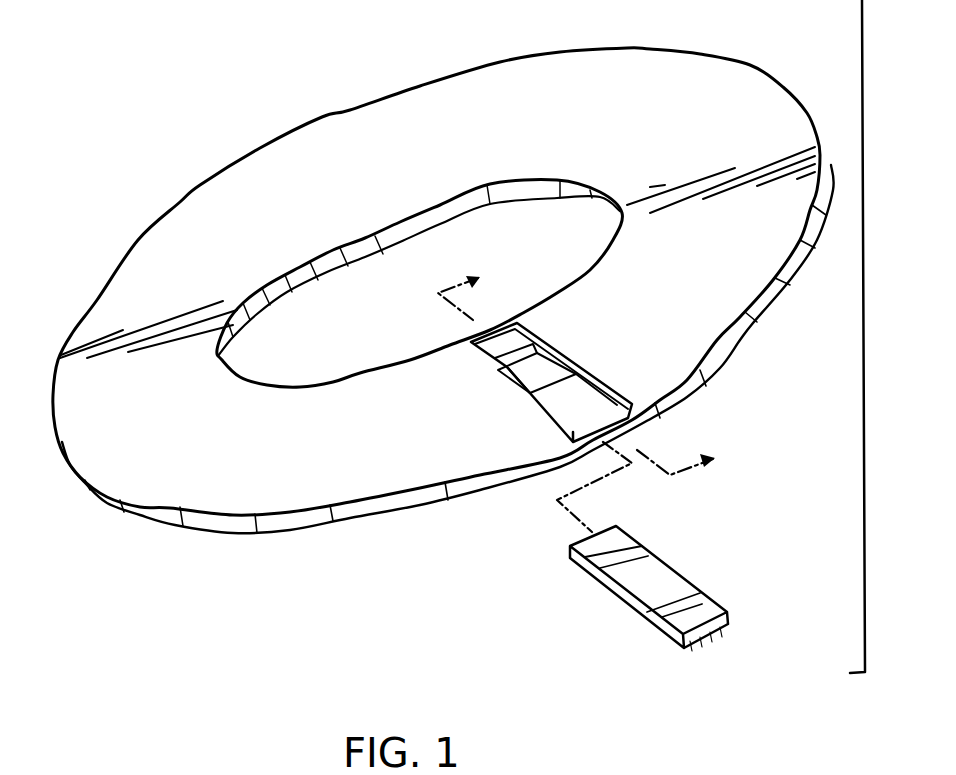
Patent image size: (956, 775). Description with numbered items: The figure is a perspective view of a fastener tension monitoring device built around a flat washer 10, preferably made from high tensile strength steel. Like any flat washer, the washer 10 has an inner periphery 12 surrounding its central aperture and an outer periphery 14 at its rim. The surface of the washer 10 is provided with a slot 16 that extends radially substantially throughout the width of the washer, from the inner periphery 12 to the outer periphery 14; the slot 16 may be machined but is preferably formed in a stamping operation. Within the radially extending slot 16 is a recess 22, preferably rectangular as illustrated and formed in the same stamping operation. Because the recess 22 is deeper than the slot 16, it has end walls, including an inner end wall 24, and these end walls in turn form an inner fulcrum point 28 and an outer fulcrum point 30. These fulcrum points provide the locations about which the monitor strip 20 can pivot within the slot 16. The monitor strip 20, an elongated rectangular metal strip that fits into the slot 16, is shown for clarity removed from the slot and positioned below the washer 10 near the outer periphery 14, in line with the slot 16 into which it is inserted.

The flat washer 10 is at (443, 328).
The inner periphery 12 is at (293, 278).
The outer periphery 14 is at (322, 117).
The slot 16 is at (600, 413).
The monitor strip 20 is at (663, 577).
The recess 22 is at (542, 377).
The inner end wall 24 is at (500, 367).
The inner fulcrum point 28 is at (533, 332).
The outer fulcrum point 30 is at (548, 390).